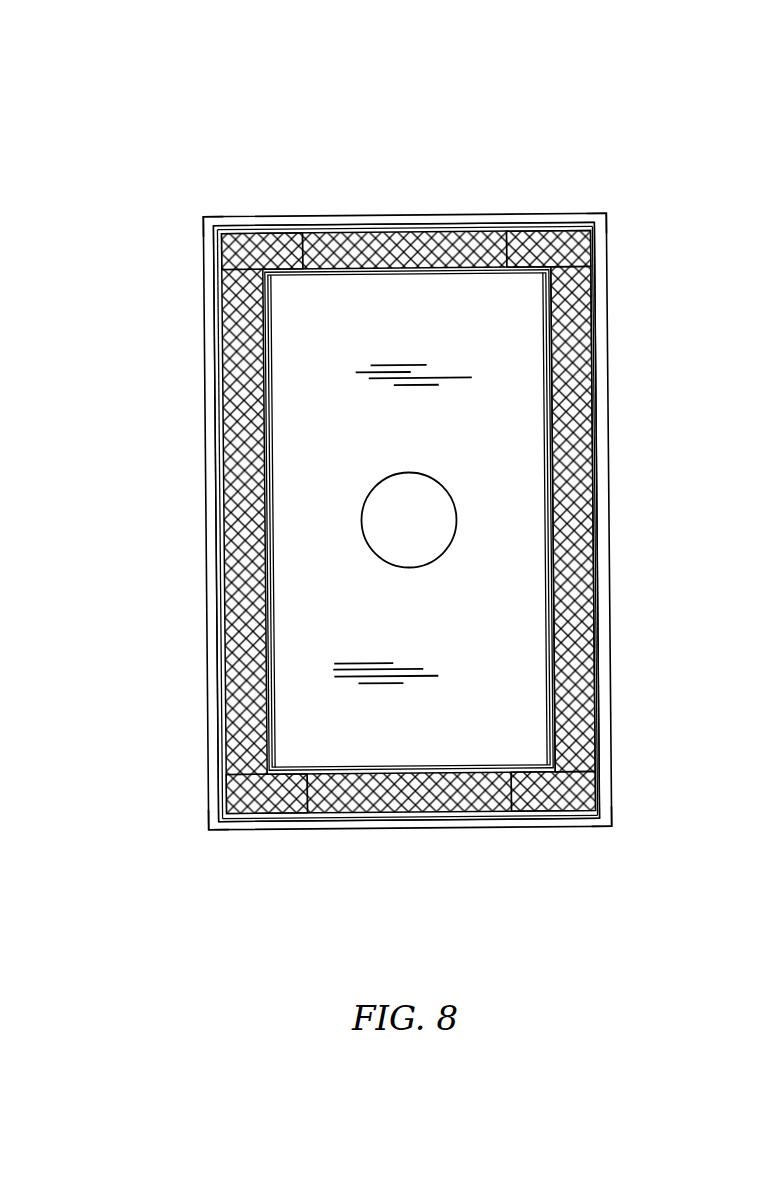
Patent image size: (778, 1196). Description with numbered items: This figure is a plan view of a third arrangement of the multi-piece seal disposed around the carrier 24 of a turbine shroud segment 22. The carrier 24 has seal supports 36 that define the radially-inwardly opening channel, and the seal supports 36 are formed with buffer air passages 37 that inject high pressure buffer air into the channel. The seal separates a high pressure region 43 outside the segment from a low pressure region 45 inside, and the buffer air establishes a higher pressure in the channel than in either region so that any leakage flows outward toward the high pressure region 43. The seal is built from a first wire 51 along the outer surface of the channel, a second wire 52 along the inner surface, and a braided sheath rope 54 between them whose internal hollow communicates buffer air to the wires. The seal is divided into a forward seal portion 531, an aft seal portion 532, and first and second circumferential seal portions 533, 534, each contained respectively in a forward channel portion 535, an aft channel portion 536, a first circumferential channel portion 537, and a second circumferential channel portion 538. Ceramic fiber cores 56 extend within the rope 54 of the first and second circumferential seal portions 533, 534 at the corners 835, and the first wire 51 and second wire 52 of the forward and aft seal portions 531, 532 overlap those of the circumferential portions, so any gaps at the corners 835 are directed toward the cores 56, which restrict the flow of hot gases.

The shroud segment 22 is at (597, 86).
The carrier 24 is at (418, 628).
The seal support 36 is at (610, 320).
The buffer air passage 37 is at (593, 418).
The high pressure region 43 is at (148, 530).
The low pressure region 45 is at (418, 443).
The first wire 51 is at (217, 332).
The second wire 52 is at (272, 368).
The rope 54 is at (255, 407).
The core 56 is at (288, 262).
The forward seal portion 531 is at (217, 642).
The aft seal portion 532 is at (601, 663).
The first circumferential seal portion 533 is at (527, 823).
The second circumferential seal portion 534 is at (453, 222).
The forward channel portion 535 is at (220, 720).
The aft channel portion 536 is at (593, 717).
The first circumferential channel portion 537 is at (342, 820).
The second circumferential channel portion 538 is at (360, 223).
The corner 835 is at (206, 214).